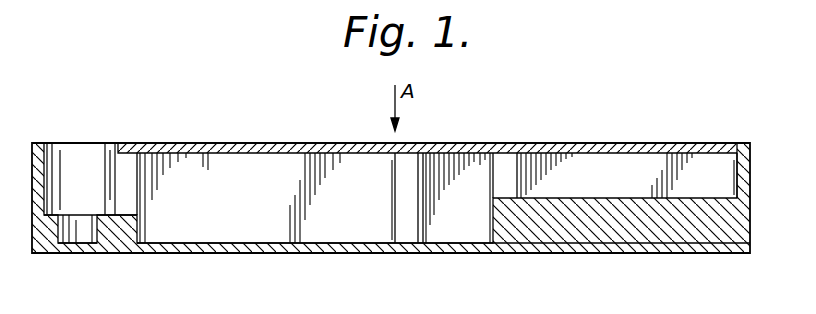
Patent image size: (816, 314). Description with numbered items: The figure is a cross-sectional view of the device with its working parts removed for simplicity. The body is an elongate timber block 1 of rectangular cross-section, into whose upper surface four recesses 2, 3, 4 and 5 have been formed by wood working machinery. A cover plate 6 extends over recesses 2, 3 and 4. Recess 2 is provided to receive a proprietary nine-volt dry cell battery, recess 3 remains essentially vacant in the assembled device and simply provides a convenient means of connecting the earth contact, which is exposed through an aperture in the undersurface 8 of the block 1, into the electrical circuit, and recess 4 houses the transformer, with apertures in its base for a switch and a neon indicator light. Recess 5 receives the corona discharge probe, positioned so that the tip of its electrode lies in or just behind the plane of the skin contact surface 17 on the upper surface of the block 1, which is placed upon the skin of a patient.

The timber block 1 is at (32, 136).
The recess 2 is at (629, 184).
The recess 3 is at (476, 215).
The recess 4 is at (280, 208).
The recess 5 is at (101, 197).
The cover plate 6 is at (558, 143).
The undersurface 8 is at (447, 253).
The skin contact surface 17 is at (40, 143).